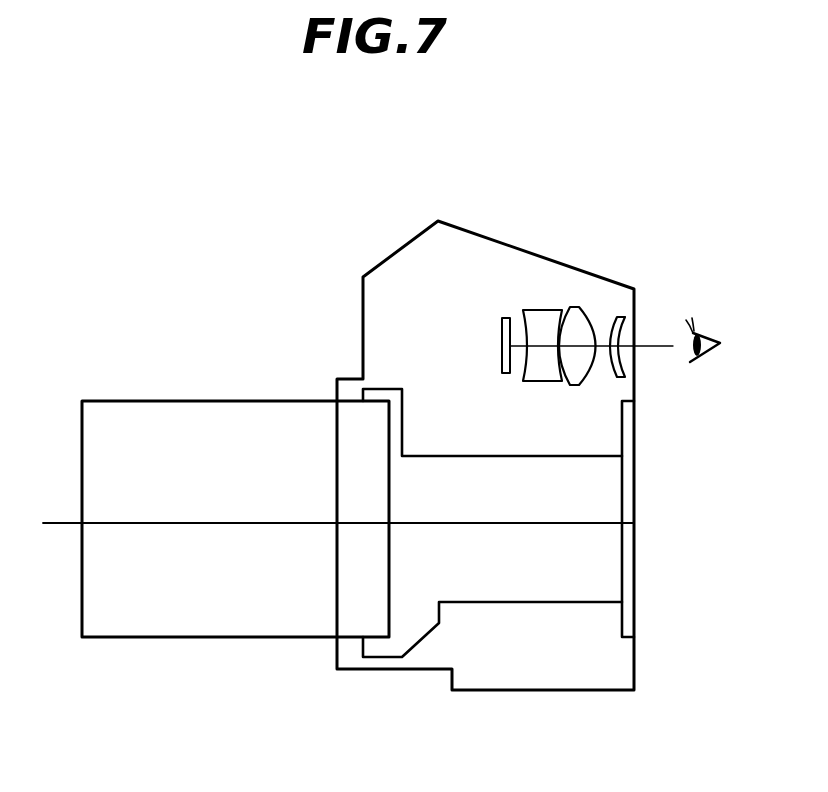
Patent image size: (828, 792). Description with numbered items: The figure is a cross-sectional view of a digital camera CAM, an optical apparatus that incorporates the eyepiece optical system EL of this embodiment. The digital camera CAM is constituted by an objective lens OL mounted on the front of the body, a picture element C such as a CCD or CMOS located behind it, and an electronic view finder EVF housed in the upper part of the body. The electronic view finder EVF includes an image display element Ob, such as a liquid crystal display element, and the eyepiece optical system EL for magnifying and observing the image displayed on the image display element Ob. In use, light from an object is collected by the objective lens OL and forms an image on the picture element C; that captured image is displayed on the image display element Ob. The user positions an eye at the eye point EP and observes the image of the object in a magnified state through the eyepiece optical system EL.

The digital camera CAM is at (177, 303).
The objective lens OL is at (142, 415).
The electronic view finder EVF is at (543, 297).
The eyepiece optical system EL is at (608, 305).
The image display element Ob is at (500, 327).
The eye point EP is at (703, 357).
The picture element C is at (627, 502).